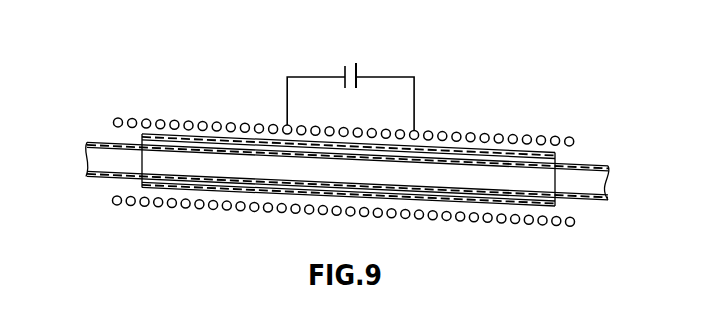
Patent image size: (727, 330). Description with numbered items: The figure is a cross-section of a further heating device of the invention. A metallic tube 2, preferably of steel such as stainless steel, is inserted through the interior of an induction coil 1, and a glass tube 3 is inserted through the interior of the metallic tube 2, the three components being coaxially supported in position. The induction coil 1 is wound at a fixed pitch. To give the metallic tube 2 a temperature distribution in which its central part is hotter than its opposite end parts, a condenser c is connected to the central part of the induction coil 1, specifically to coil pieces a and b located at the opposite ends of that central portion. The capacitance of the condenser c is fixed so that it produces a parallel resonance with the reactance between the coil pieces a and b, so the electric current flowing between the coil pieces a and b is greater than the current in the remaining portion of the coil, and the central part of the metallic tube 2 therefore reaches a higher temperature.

The induction coil 1 is at (520, 135).
The metallic tube 2 is at (557, 157).
The glass tube 3 is at (86, 174).
The coil piece a is at (285, 123).
The coil piece b is at (416, 125).
The condenser c is at (357, 74).